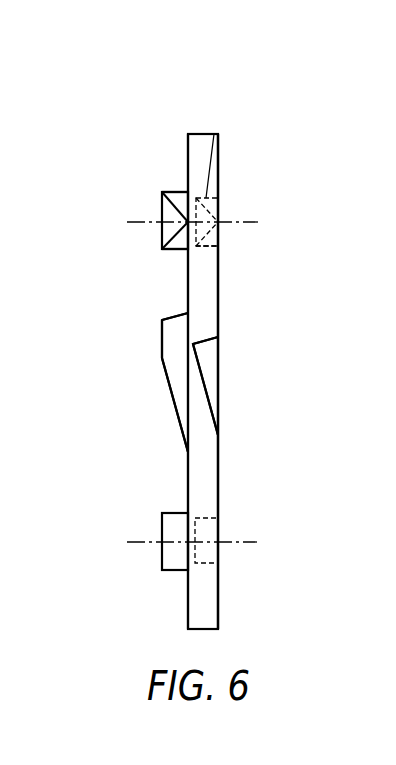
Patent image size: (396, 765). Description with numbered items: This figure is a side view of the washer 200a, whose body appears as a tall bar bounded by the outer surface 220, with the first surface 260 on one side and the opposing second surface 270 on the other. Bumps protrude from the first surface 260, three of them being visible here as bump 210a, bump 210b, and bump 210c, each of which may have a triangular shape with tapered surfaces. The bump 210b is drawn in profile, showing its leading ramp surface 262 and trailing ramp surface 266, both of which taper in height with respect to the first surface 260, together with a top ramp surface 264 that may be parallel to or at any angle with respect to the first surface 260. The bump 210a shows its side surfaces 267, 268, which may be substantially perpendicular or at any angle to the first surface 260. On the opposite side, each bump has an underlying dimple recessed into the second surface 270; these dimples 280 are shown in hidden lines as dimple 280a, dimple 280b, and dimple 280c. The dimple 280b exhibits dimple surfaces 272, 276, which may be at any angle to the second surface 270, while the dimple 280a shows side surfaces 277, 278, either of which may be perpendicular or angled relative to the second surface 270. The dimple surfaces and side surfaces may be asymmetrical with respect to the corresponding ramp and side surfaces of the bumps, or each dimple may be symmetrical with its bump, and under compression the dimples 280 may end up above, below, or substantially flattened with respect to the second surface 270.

The washer 200a is at (198, 325).
The outer surface 220 is at (198, 134).
The first surface 260 is at (188, 143).
The second surface 270 is at (218, 150).
The side surface 277 is at (214, 134).
The side surface 278 is at (205, 246).
The side surface 267 is at (176, 192).
The side surface 268 is at (178, 249).
The bump 210a is at (149, 204).
The dimple 280a is at (243, 170).
The bump 210b is at (115, 365).
The trailing ramp surface 266 is at (177, 315).
The top ramp surface 264 is at (162, 352).
The leading ramp surface 262 is at (172, 398).
The dimple 280b is at (262, 356).
The dimple surface 276 is at (208, 338).
The dimple surface 272 is at (205, 400).
The dimples 280 is at (242, 368).
The bump 210c is at (143, 519).
The dimple 280c is at (214, 528).